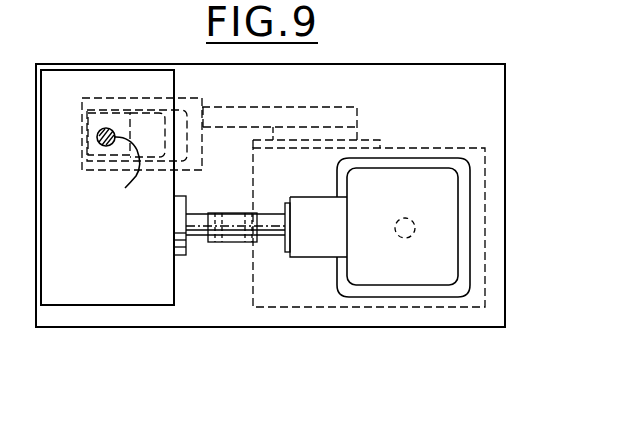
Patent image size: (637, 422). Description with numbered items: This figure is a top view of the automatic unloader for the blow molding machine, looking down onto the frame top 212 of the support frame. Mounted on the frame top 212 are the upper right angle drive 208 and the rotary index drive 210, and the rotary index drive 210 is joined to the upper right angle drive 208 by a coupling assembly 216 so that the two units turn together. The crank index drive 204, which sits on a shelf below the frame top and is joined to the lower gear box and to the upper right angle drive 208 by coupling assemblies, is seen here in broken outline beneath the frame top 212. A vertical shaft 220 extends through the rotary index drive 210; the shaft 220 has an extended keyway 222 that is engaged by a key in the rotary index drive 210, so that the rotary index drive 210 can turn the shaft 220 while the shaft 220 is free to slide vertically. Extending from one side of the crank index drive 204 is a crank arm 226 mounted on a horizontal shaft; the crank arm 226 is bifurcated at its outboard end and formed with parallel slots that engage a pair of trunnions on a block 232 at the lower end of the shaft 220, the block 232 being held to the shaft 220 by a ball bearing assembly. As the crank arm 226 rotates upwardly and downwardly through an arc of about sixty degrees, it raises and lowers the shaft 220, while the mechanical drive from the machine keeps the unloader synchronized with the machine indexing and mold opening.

The crank index drive 204 is at (308, 295).
The upper right angle drive 208 is at (433, 228).
The rotary index drive 210 is at (140, 278).
The frame top 212 is at (495, 113).
The coupling assembly 216 is at (238, 238).
The shaft 220 is at (105, 128).
The keyway 222 is at (123, 181).
The crank arm 226 is at (264, 117).
The block 232 is at (87, 120).